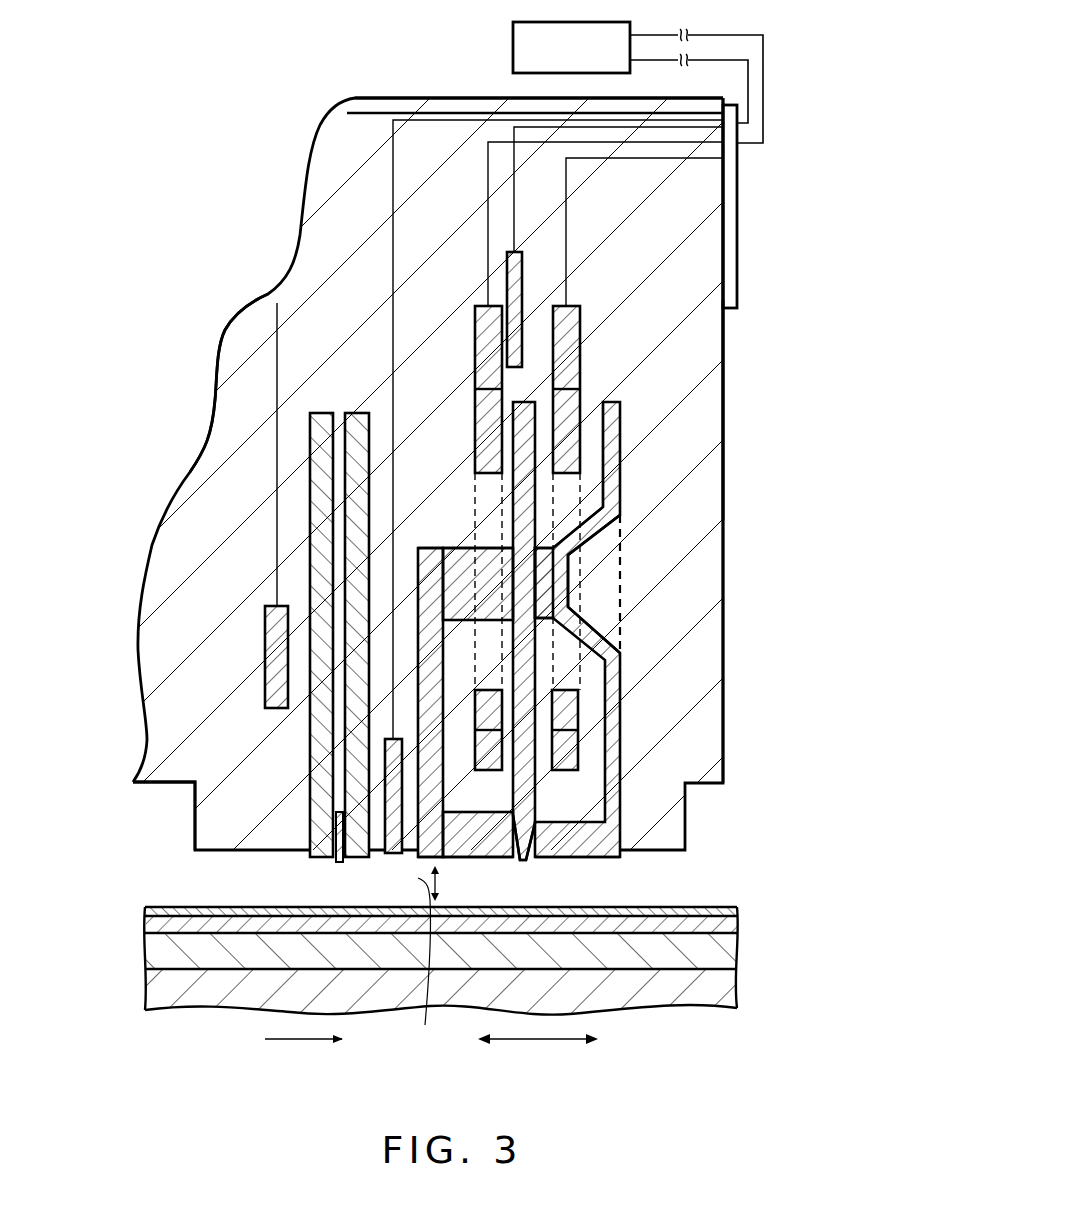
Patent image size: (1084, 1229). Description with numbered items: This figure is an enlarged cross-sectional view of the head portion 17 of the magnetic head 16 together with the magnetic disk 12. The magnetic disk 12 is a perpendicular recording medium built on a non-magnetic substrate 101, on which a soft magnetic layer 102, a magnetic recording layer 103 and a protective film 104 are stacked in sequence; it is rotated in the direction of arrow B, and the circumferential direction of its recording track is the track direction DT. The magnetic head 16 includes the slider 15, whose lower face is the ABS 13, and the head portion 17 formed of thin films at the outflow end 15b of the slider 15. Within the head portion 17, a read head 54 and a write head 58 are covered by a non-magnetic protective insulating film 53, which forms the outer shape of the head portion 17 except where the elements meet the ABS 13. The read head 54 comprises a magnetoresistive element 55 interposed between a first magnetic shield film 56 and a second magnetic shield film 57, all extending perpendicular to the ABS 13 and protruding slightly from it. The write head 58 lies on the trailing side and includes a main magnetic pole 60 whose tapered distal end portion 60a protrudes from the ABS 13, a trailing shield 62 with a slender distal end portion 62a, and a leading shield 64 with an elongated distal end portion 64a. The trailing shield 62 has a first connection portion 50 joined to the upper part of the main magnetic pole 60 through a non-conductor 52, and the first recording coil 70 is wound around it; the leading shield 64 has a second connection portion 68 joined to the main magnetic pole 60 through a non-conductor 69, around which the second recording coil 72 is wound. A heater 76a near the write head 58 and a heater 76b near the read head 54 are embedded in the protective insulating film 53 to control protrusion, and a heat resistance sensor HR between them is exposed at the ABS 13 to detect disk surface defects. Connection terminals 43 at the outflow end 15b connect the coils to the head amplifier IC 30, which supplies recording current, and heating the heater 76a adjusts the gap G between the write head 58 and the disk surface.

The magnetic disk 12 is at (477, 993).
The ABS 13 is at (160, 786).
The slider 15 is at (168, 710).
The outflow end 15b is at (725, 484).
The magnetic head 16 is at (262, 222).
The head portion 17 is at (245, 397).
The head amplifier IC 30 is at (513, 50).
The connection terminals 43 is at (739, 232).
The first connection portion 50 is at (562, 603).
The non-conductor 52 is at (542, 570).
The protective insulating film 53 is at (708, 410).
The read head 54 is at (227, 610).
The magnetoresistive element 55 is at (335, 830).
The first magnetic shield film 56 is at (320, 567).
The second magnetic shield film 57 is at (355, 520).
The write head 58 is at (560, 456).
The main magnetic pole 60 is at (523, 795).
The distal end portion of main magnetic pole 60a is at (522, 862).
The trailing shield 62 is at (632, 664).
The distal end portion of trailing shield 62a is at (578, 858).
The leading shield 64 is at (428, 547).
The distal end portion of leading shield 64a is at (470, 858).
The second connection portion 68 is at (467, 553).
The non-conductor 69 is at (510, 545).
The first recording coil 70 is at (637, 464).
The second recording coil 72 is at (480, 425).
The heater 76a is at (507, 290).
The heater 76b is at (272, 652).
The substrate 101 is at (735, 988).
The soft magnetic layer 102 is at (735, 958).
The magnetic recording layer 103 is at (737, 930).
The protective film 104 is at (740, 909).
The heat resistance sensor HR is at (406, 884).
The gap G is at (425, 966).
The direction of rotation B is at (303, 1055).
The track direction DT is at (538, 1053).